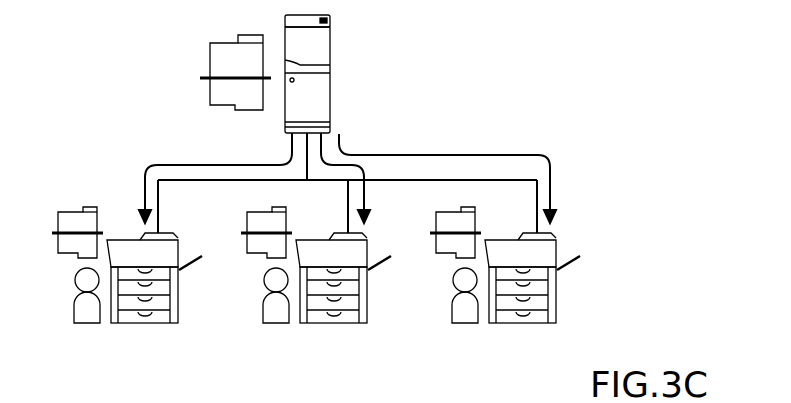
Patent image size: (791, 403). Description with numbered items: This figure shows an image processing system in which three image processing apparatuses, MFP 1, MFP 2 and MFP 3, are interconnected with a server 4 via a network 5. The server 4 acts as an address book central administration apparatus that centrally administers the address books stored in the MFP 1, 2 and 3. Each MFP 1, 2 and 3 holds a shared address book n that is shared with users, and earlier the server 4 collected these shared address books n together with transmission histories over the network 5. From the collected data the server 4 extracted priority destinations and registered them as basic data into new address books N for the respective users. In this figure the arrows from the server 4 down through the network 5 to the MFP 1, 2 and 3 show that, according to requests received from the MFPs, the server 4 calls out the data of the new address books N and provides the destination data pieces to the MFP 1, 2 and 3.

The MFP 1 is at (145, 324).
The MFP 2 is at (343, 310).
The MFP 3 is at (532, 310).
The server 4 is at (330, 46).
The network 5 is at (221, 181).
The address book N is at (210, 62).
The shared address book n is at (63, 258).